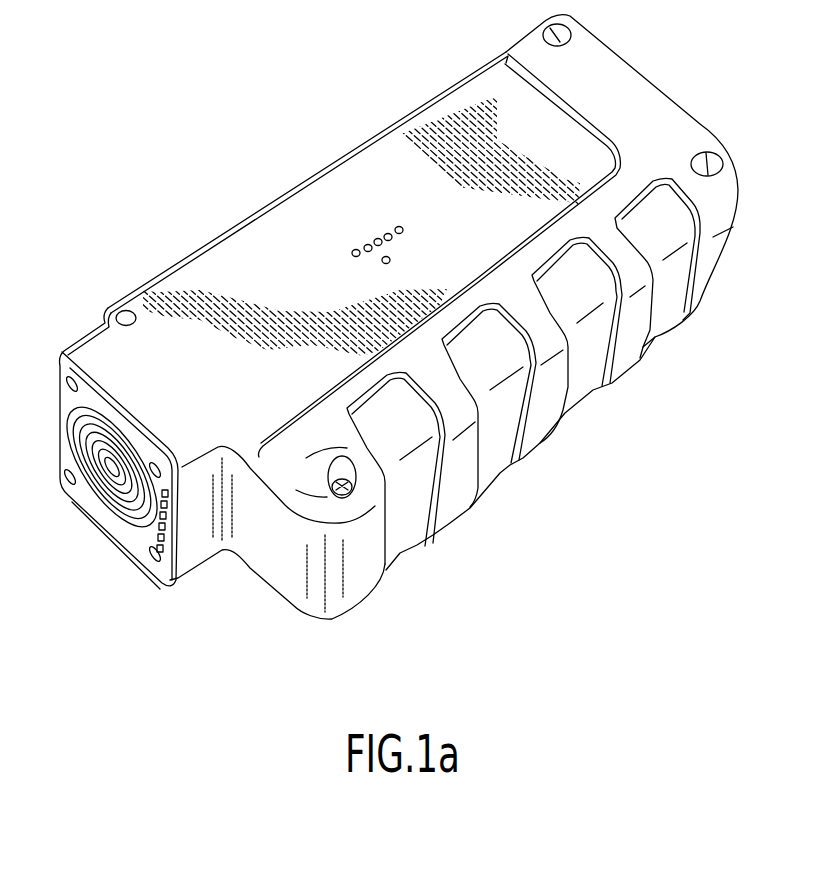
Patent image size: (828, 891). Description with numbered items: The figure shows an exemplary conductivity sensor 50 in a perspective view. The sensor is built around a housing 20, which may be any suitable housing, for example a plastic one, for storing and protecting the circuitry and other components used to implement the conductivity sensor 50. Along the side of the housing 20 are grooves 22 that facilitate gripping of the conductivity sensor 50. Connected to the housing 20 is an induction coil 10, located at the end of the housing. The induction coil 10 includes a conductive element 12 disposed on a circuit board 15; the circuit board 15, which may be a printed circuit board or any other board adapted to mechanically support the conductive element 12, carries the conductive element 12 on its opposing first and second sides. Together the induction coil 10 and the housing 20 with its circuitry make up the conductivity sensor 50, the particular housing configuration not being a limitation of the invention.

The induction coil 10 is at (58, 425).
The conductive element 12 is at (95, 489).
The circuit board 15 is at (143, 546).
The housing 20 is at (326, 173).
The grooves 22 is at (660, 338).
The conductivity sensor 50 is at (204, 128).